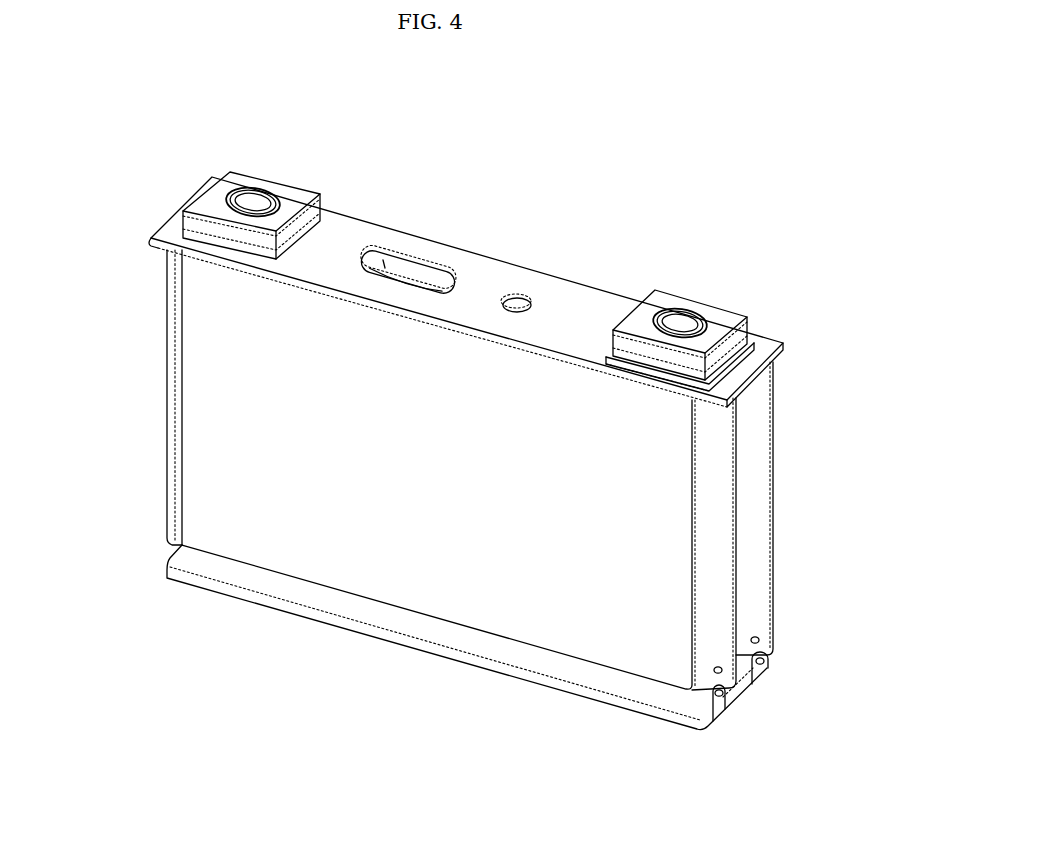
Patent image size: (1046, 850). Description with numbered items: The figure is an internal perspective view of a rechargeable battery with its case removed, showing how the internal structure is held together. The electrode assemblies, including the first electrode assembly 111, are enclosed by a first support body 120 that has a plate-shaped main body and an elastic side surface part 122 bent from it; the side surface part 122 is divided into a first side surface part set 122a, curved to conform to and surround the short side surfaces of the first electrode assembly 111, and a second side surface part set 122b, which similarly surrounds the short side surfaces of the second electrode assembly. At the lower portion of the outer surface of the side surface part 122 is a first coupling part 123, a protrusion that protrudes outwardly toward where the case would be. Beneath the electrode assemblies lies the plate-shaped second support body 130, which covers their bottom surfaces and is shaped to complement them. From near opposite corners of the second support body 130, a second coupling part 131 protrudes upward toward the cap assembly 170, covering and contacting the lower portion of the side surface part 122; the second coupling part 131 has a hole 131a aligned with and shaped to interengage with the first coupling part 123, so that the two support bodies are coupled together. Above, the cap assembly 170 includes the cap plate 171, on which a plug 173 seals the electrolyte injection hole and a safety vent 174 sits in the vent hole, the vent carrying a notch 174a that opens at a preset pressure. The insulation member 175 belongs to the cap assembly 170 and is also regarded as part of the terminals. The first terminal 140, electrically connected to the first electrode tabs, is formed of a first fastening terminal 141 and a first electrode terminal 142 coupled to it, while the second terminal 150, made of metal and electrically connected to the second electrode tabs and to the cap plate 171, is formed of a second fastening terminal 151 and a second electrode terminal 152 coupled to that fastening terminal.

The first electrode assembly 111 is at (378, 563).
The first support body 120 is at (502, 470).
The side surface part 122 is at (158, 379).
The first side surface part set 122a is at (722, 563).
The second side surface part set 122b is at (762, 516).
The first coupling part 123 is at (760, 638).
The second support body 130 is at (513, 665).
The second coupling part 131 is at (786, 698).
The hole 131a is at (721, 690).
The first terminal 140 is at (682, 284).
The first fastening terminal 141 is at (679, 286).
The first electrode terminal 142 is at (713, 318).
The second terminal 150 is at (254, 163).
The second fastening terminal 151 is at (253, 165).
The second electrode terminal 152 is at (288, 200).
The cap assembly 170 is at (466, 266).
The cap plate 171 is at (349, 232).
The plug 173 is at (540, 255).
The safety vent 174 is at (437, 228).
The notch 174a is at (402, 269).
The insulation member 175 is at (752, 333).